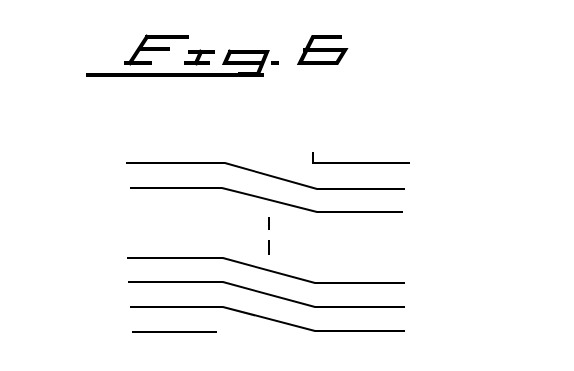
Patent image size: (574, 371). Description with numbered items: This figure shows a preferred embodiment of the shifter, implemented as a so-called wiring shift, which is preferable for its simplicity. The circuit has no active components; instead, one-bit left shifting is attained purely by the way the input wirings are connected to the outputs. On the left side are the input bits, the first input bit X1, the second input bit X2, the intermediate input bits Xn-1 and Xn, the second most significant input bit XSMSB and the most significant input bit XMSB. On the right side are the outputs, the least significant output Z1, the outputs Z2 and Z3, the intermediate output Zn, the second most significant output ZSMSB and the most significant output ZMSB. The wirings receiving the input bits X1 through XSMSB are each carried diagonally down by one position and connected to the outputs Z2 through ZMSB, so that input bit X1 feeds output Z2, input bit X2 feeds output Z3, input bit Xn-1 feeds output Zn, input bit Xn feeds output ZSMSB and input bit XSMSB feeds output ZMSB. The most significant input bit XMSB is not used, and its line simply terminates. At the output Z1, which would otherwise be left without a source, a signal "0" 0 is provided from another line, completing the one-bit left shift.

The input bit X1 is at (248, 168).
The input bit X2 is at (247, 192).
The input bit Xn-1 is at (237, 264).
The input bit Xn is at (237, 290).
The second most significant input bit XSMSB is at (237, 314).
The most significant input bit XMSB is at (151, 337).
The output Z1 is at (378, 164).
The output Z2 is at (421, 189).
The output Z3 is at (420, 214).
The output Zn is at (420, 287).
The second most significant output ZSMSB is at (434, 312).
The most significant output ZMSB is at (430, 337).
The signal "0" 0 is at (320, 137).